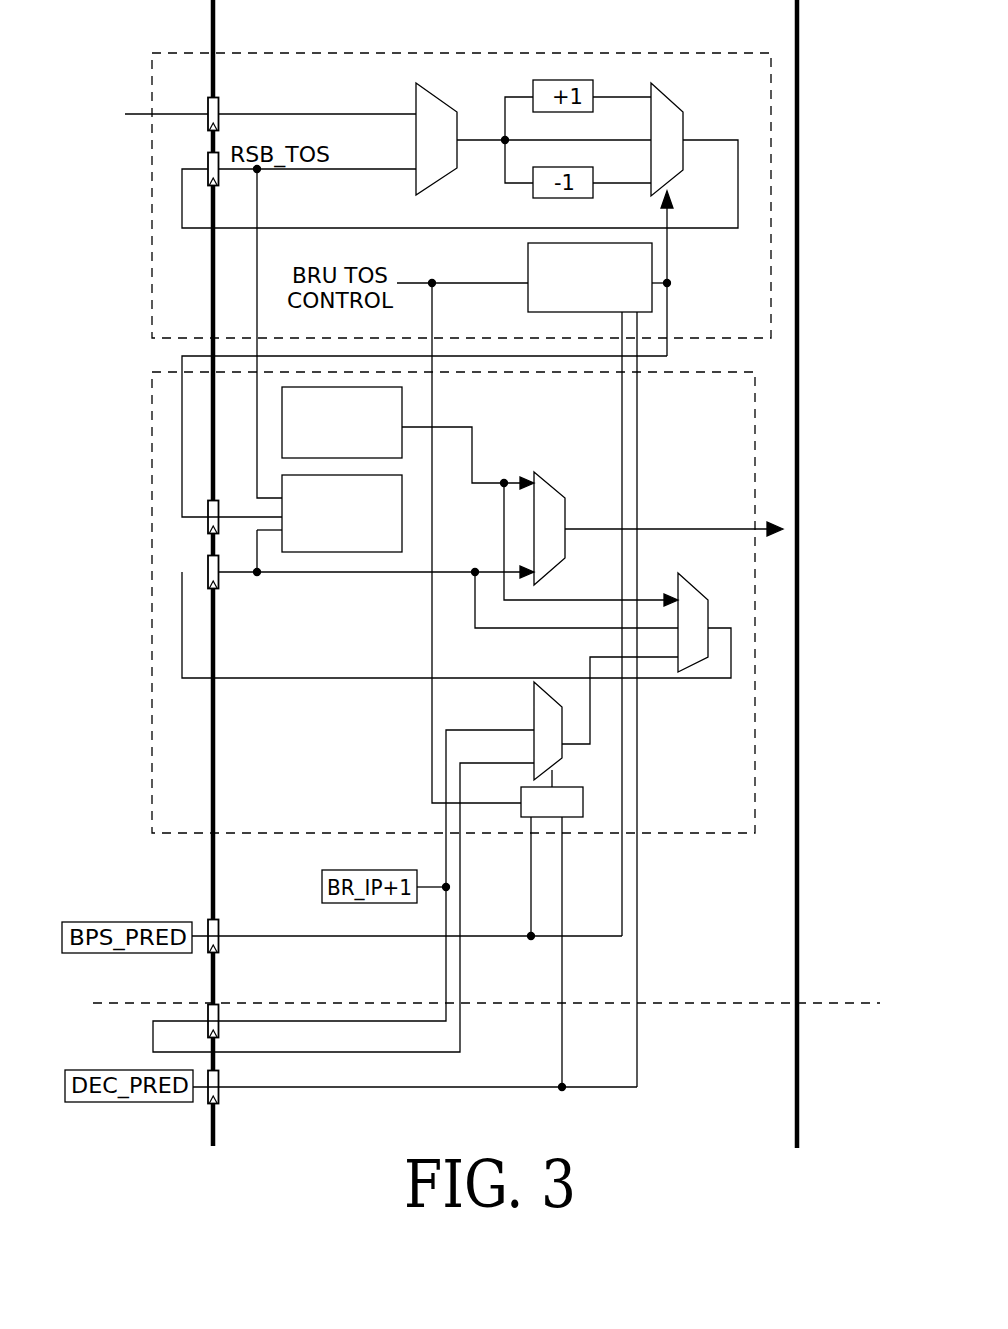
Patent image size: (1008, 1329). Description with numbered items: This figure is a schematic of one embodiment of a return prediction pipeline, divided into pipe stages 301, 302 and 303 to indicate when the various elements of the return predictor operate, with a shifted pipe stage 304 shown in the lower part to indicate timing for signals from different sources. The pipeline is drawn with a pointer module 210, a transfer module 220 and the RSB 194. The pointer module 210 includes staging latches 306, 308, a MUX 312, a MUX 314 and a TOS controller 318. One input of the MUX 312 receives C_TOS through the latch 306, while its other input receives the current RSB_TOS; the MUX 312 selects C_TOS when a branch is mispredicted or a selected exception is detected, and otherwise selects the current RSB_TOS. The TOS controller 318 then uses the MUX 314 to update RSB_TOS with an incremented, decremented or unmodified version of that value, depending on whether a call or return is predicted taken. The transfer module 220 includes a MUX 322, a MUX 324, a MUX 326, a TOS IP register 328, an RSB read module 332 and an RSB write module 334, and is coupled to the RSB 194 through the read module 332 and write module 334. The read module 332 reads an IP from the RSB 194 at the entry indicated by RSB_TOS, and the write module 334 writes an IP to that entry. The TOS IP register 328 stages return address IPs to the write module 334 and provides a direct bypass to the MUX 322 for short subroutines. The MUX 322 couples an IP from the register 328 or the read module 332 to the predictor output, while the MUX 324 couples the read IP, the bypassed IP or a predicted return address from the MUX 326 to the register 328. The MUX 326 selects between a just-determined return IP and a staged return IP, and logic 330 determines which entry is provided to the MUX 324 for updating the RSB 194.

The RSB 194 is at (420, 390).
The pointer module 210 is at (461, 195).
The transfer module 220 is at (453, 602).
The pipe stage 301 is at (232, 71).
The pipe stage 302 is at (294, 606).
The pipe stage 303 is at (674, 574).
The shifted pipe stage 304 is at (493, 1107).
The staging latch 306 is at (220, 104).
The staging latch 308 is at (208, 164).
The MUX 312 is at (436, 139).
The MUX 314 is at (667, 139).
The TOS controller 318 is at (590, 277).
The MUX 322 is at (549, 528).
The MUX 324 is at (693, 622).
The MUX 326 is at (548, 731).
The TOS IP register 328 is at (237, 595).
The logic 330 is at (552, 802).
The RSB read module 332 is at (342, 421).
The RSB write module 334 is at (342, 513).